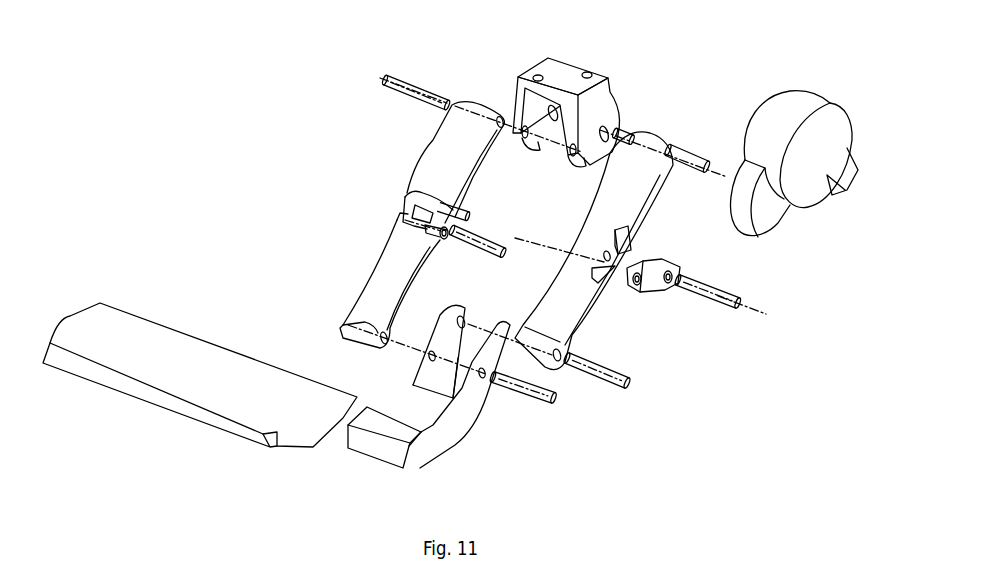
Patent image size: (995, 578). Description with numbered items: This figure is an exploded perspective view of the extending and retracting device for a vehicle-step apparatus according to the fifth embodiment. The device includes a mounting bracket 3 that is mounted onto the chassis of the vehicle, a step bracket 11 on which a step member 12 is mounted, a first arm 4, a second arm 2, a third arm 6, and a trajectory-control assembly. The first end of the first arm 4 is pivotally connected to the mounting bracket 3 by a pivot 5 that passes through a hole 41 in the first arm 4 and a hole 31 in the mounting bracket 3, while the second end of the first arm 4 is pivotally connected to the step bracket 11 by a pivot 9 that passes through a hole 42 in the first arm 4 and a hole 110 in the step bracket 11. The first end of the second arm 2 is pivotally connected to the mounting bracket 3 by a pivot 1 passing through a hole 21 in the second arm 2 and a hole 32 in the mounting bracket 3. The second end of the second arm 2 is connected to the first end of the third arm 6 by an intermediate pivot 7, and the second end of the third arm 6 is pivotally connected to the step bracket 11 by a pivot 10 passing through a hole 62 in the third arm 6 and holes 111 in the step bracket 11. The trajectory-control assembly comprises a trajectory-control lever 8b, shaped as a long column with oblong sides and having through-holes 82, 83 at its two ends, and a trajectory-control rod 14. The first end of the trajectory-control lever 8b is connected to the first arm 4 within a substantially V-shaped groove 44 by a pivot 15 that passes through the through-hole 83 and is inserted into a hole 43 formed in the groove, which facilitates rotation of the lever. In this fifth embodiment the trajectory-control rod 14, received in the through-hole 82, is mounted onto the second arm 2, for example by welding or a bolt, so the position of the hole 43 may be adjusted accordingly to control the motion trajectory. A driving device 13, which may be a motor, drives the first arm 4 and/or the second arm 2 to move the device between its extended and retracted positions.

The pivot 1 is at (432, 90).
The second arm 2 is at (467, 107).
The hole 21 is at (500, 116).
The mounting bracket 3 is at (548, 62).
The hole 31 is at (617, 110).
The hole 32 is at (567, 158).
The first arm 4 is at (641, 135).
The hole 41 is at (677, 148).
The hole 42 is at (563, 355).
The hole 43 is at (600, 254).
The V-shaped groove 44 is at (626, 250).
The pivot 5 is at (703, 158).
The third arm 6 is at (375, 270).
The hole 62 is at (352, 322).
The intermediate pivot 7 is at (490, 243).
The trajectory-control lever 8b is at (650, 290).
The through-hole 82 is at (640, 288).
The through-hole 83 is at (670, 274).
The pivot 9 is at (600, 373).
The pivot 10 is at (515, 388).
The step bracket 11 is at (432, 455).
The hole 110 is at (464, 320).
The holes 111 is at (428, 358).
The step member 12 is at (270, 437).
The driving device 13 is at (795, 92).
The trajectory-control rod 14 is at (418, 198).
The pivot 15 is at (708, 293).